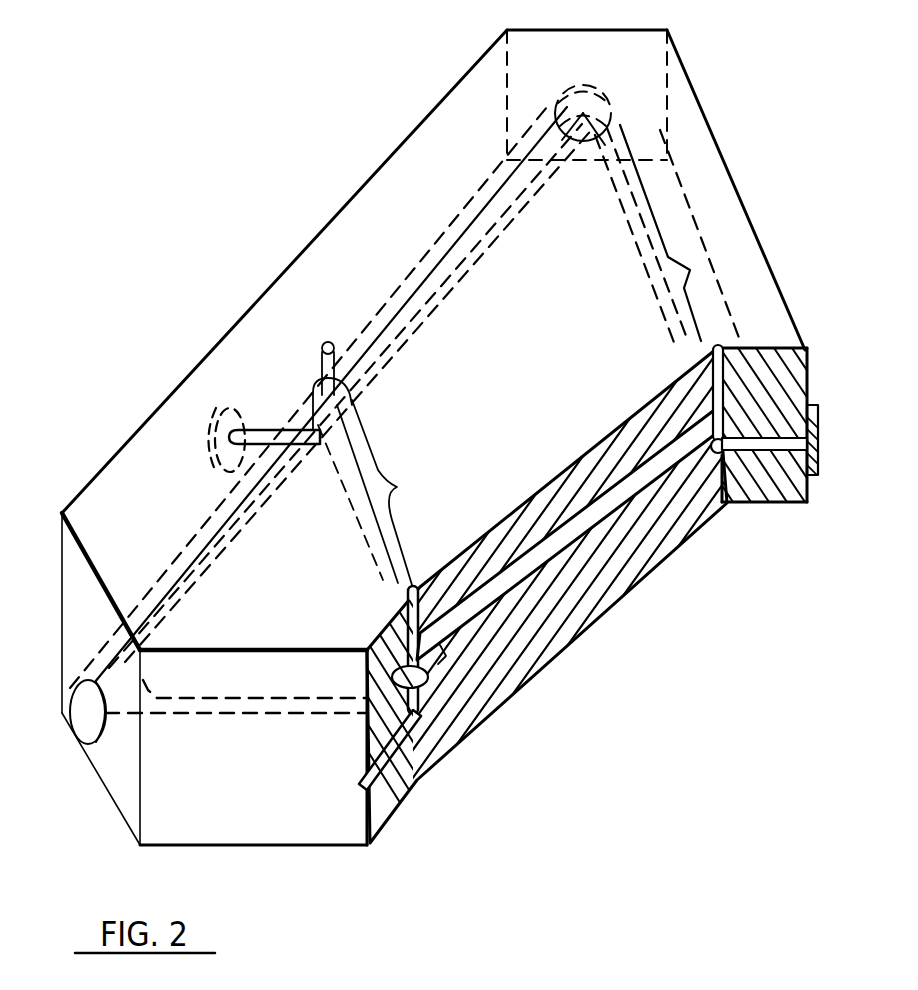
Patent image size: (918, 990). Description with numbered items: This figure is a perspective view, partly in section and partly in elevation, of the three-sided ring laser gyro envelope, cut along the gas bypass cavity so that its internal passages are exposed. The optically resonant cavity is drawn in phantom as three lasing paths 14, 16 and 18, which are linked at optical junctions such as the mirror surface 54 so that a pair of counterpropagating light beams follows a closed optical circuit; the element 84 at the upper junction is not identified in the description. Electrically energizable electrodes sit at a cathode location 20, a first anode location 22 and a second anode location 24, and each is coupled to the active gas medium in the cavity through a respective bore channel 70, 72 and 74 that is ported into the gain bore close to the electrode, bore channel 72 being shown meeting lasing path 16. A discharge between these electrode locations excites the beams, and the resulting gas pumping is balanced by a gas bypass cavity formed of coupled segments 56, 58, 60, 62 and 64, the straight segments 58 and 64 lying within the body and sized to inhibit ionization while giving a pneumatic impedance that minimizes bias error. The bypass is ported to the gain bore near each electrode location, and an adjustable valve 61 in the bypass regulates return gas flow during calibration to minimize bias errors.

The lasing path 14 is at (332, 397).
The lasing path 16 is at (367, 715).
The lasing path 18 is at (668, 235).
The cathode location 20 is at (363, 789).
The first anode location 22 is at (201, 444).
The second anode location 24 is at (820, 432).
The mirror surface 54 is at (70, 737).
The gas bypass cavity segment 56 is at (322, 427).
The gas bypass segment 58 is at (374, 557).
The gas bypass cavity segment 60 is at (451, 661).
The valve 61 is at (383, 622).
The gas bypass cavity segment 62 is at (746, 438).
The gas bypass segment 64 is at (567, 530).
The bore channel 70 is at (320, 430).
The bore channel 72 is at (367, 748).
The bore channel 74 is at (736, 456).
The ball fitting 84 is at (576, 96).